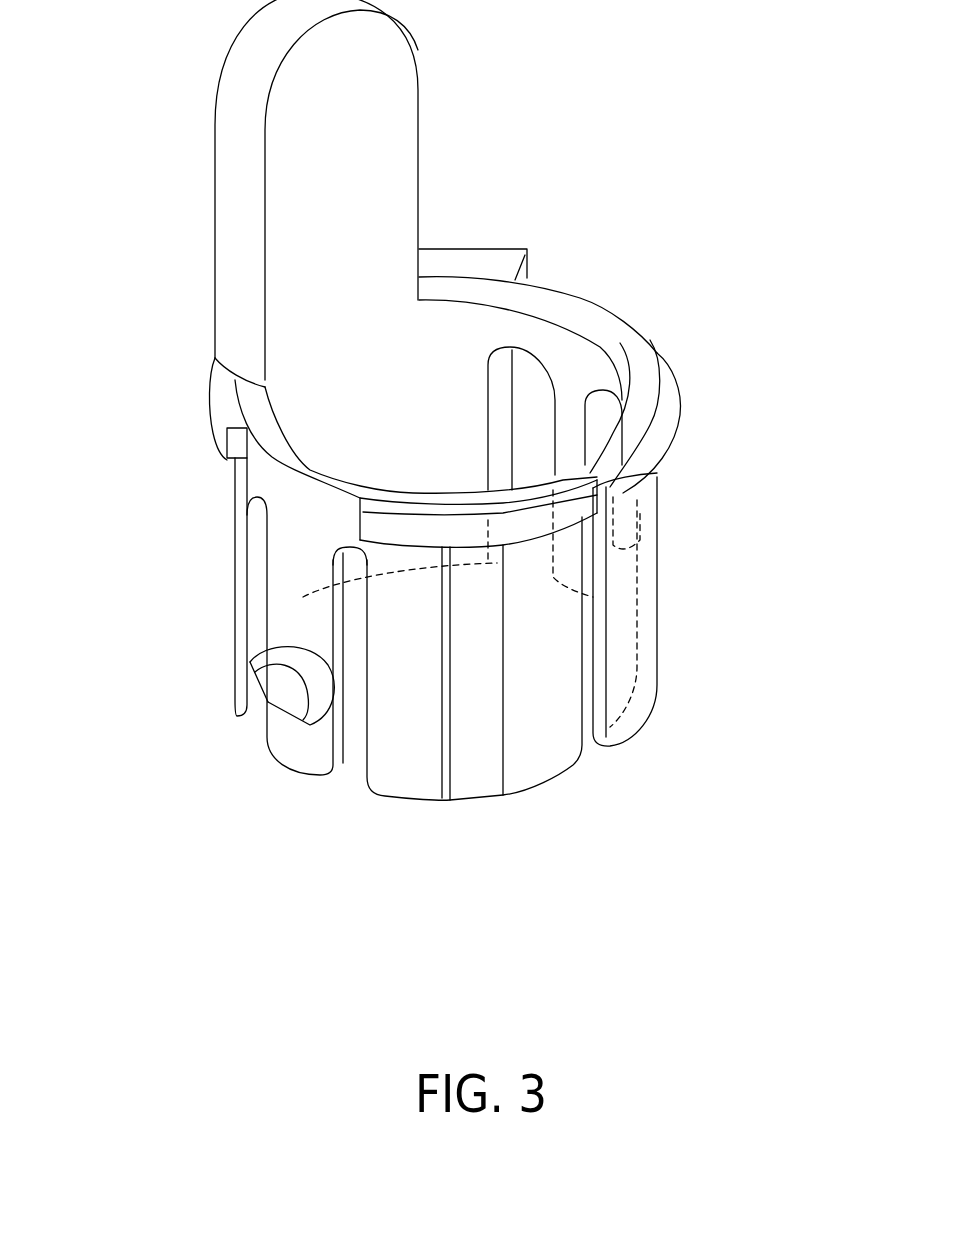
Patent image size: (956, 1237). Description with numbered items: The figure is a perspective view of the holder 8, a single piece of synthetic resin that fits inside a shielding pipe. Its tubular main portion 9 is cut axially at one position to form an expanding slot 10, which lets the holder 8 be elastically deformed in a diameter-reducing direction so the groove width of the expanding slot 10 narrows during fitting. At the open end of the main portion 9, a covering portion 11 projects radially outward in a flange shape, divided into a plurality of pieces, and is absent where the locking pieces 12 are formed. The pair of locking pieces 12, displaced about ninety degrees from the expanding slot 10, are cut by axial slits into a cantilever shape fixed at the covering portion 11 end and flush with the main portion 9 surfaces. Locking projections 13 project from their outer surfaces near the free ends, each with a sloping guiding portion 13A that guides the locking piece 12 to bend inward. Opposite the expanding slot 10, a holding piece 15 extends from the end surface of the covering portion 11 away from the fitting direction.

The holder 8 is at (503, 167).
The tubular main portion 9 is at (553, 733).
The expanding slot 10 is at (587, 685).
The covering portion 11 is at (220, 388).
The locking piece 12 is at (283, 558).
The locking projection 13 is at (268, 677).
The guiding portion 13A is at (283, 722).
The holding piece 15 is at (295, 178).